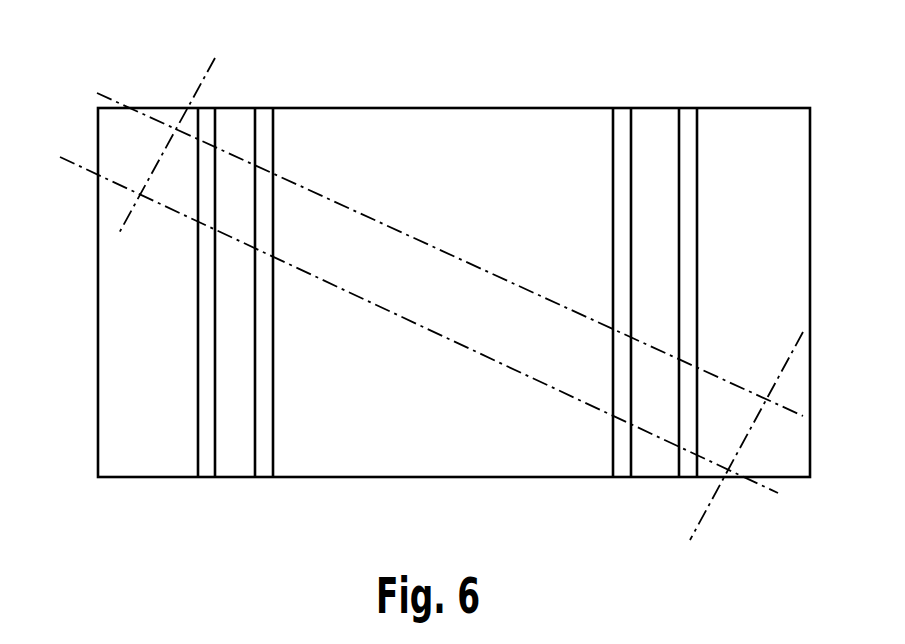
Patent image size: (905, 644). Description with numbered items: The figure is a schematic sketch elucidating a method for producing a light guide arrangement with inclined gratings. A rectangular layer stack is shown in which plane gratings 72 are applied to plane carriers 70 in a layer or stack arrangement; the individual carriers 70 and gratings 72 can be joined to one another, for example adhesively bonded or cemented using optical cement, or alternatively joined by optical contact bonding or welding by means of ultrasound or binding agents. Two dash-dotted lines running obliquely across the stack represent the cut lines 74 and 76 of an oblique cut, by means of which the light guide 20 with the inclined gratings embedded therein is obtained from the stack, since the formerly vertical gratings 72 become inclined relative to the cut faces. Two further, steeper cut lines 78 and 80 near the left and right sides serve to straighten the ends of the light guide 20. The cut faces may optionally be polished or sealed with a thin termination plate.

The light guide 20 is at (431, 293).
The plane carrier 70 is at (110, 135).
The plane grating 72 is at (207, 120).
The cut line 74 is at (462, 345).
The cut line 76 is at (470, 264).
The cut line 78 is at (205, 78).
The cut line 80 is at (753, 426).